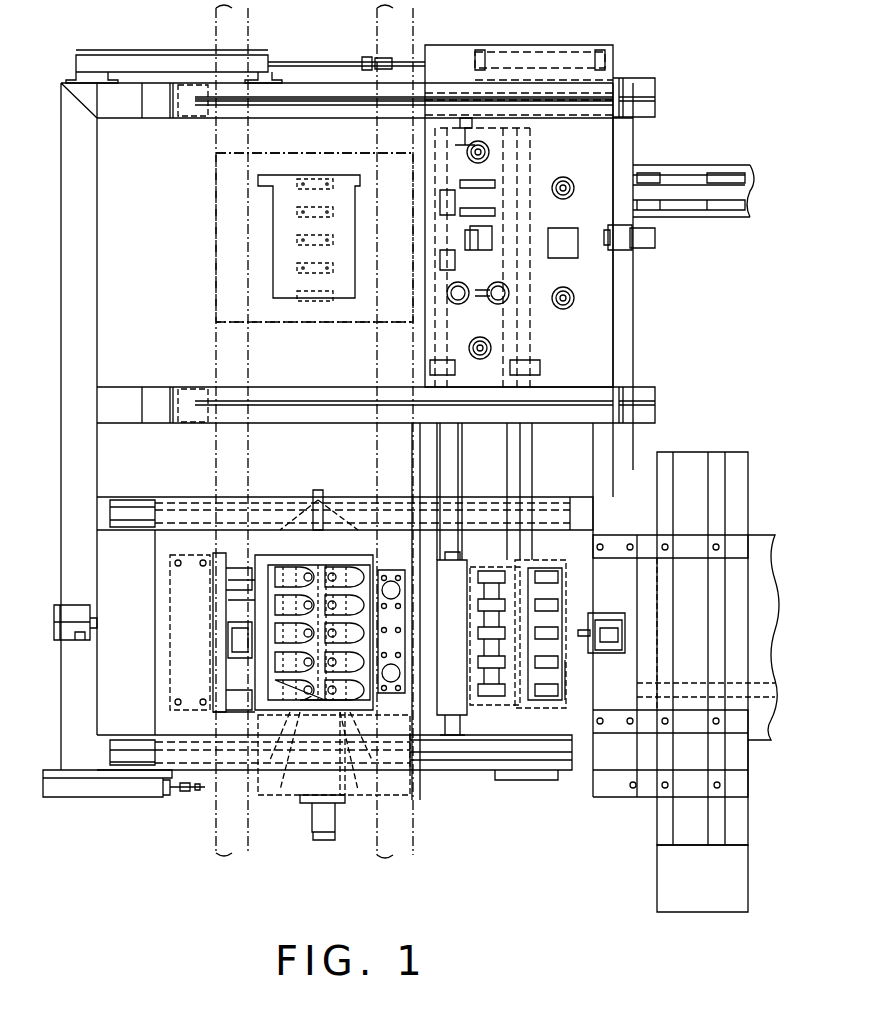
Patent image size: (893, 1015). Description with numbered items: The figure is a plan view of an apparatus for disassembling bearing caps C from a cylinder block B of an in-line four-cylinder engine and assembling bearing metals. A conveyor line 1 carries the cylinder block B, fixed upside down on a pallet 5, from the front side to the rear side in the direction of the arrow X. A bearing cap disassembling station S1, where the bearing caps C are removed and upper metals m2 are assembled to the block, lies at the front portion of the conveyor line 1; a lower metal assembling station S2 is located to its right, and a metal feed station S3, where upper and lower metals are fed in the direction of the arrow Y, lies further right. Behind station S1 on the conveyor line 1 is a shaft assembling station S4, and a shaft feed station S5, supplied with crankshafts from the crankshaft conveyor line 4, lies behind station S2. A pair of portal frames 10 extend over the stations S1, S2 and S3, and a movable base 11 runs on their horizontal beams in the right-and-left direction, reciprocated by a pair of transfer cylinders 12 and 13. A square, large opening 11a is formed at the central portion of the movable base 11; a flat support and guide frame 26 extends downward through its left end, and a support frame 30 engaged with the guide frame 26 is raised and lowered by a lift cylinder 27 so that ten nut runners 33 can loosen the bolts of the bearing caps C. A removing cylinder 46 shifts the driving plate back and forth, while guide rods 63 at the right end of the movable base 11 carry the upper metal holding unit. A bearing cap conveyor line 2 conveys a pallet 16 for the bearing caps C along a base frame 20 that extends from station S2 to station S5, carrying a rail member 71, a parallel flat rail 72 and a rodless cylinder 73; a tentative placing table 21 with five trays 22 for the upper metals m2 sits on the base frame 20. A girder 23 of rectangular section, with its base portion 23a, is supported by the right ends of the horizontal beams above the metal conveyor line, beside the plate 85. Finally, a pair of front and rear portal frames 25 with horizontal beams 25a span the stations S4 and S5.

The conveyor line 1 is at (304, 463).
The bearing cap conveyor line 2 is at (500, 443).
The crankshaft conveyor line 4 is at (660, 240).
The pallet 5 is at (227, 210).
The portal frames 10 is at (138, 523).
The movable base 11 is at (152, 592).
The opening 11a is at (220, 712).
The transfer cylinder 12 is at (105, 793).
The transfer cylinder 13 is at (355, 797).
The pallet 16 is at (546, 570).
The base frame 20 is at (565, 708).
The tentative placing table 21 is at (560, 660).
The trays 22 is at (560, 578).
The girder 23 is at (712, 774).
The column base 23a is at (659, 869).
The portal frames 25 is at (330, 76).
The horizontal beams 25a is at (341, 425).
The support and guide frame 26 is at (232, 638).
The lift cylinder 27 is at (228, 652).
The support frame 30 is at (255, 606).
The nut runners 33 is at (290, 710).
The removing cylinder 46 is at (315, 833).
The guide rods 63 is at (391, 580).
The rail member 71 is at (460, 484).
The flat rail 72 is at (535, 466).
The rodless cylinder 73 is at (407, 458).
The plate 85 is at (762, 700).
The cylinder block B is at (277, 237).
The bearing caps C is at (491, 570).
The upper metals m2 is at (560, 582).
The bearing cap disassembling station S1 is at (297, 730).
The lower metal assembling station S2 is at (487, 720).
The metal feed station S3 is at (578, 710).
The shaft assembling station S4 is at (289, 324).
The shaft feed station S5 is at (486, 306).
The arrow X is at (322, 862).
The arrow Y is at (690, 641).